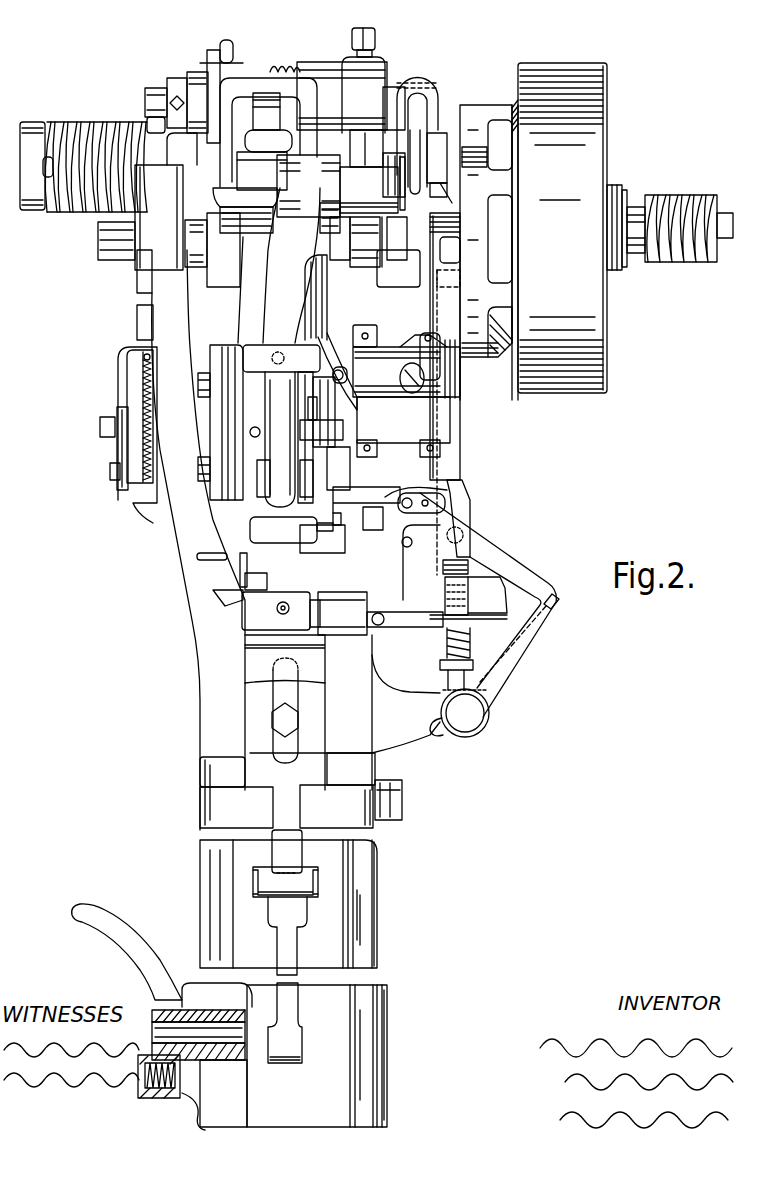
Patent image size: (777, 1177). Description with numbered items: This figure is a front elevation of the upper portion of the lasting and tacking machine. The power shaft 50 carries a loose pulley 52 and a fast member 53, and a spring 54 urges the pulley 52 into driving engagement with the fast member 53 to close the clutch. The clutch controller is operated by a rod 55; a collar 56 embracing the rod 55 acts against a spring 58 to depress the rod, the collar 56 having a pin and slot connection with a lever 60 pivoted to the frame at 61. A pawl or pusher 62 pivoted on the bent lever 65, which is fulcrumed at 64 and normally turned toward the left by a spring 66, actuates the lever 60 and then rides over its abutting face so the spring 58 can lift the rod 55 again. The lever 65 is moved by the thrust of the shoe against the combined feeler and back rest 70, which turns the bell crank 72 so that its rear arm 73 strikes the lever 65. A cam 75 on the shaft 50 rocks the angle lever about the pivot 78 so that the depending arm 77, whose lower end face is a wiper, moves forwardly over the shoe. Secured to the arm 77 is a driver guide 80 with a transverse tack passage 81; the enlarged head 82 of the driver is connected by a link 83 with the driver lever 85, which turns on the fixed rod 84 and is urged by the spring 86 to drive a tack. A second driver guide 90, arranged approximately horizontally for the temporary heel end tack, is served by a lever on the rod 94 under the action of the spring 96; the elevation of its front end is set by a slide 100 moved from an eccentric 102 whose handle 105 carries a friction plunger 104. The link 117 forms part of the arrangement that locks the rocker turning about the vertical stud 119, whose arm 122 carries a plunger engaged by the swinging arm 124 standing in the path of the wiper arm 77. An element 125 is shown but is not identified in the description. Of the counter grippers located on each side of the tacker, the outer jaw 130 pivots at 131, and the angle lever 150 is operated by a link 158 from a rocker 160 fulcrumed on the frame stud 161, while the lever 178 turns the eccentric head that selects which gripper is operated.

The shaft 50 is at (633, 207).
The loose pulley 52 is at (598, 66).
The fast member 53 is at (512, 87).
The spring 54 is at (680, 200).
The rod 55 is at (458, 416).
The collar 56 is at (468, 503).
The spring 58 is at (468, 560).
The lever 60 is at (480, 520).
The pivot 61 is at (406, 547).
The pawl or pusher 62 is at (443, 495).
The fulcrum 64 is at (470, 718).
The bent lever 65 is at (542, 585).
The spring 66 is at (560, 605).
The combined feeler and back rest 70 is at (270, 534).
The bell crank 72 is at (337, 537).
The rear arm 73 is at (380, 518).
The cam 75 is at (363, 341).
The depending arm 77 is at (267, 318).
The pivot 78 is at (258, 196).
The driver guide 80 is at (248, 327).
The transverse tack passage 81 is at (352, 415).
The enlarged head 82 is at (246, 195).
The link 83 is at (247, 83).
The rod 84 is at (150, 117).
The driver lever 85 is at (265, 110).
The spring 86 is at (281, 67).
The second driver guide 90 is at (265, 625).
The rod 94 is at (138, 117).
The spring 96 is at (70, 123).
The slide 100 is at (255, 702).
The eccentric 102 is at (257, 990).
The friction plunger 104 is at (193, 1095).
The handle 105 is at (127, 930).
The link 117 is at (388, 767).
The vertical stud 119 is at (435, 448).
The arm 122 is at (427, 392).
The swinging arm 124 is at (272, 343).
The pivot bolt 125 is at (340, 377).
The outer jaw 130 is at (225, 545).
The pivot 131 is at (197, 382).
The angle lever 150 is at (133, 503).
The link 158 is at (125, 449).
The rocker 160 is at (110, 413).
The frame stud 161 is at (123, 374).
The lever 178 is at (200, 557).